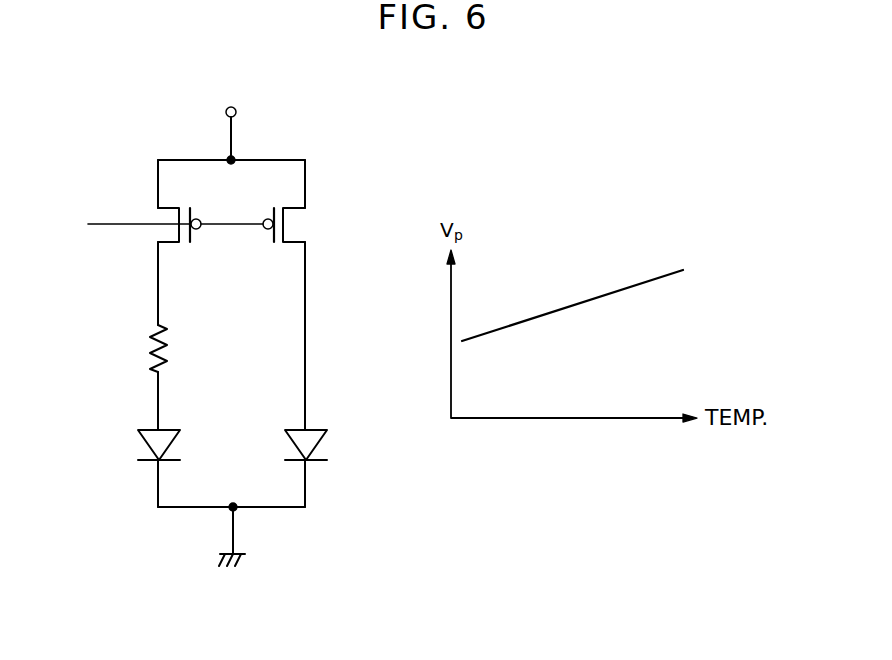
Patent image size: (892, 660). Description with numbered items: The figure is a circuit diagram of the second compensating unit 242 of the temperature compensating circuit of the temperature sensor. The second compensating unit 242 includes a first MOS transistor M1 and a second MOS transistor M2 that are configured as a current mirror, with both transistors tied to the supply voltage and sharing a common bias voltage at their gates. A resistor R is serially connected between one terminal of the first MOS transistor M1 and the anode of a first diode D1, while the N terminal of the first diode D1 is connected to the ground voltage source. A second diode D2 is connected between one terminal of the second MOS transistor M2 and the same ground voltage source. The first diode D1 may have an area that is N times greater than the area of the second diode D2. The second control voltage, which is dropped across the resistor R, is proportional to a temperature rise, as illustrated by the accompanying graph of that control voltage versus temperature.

The second compensating unit 242 is at (372, 217).
The first MOS transistor M1 is at (193, 229).
The second MOS transistor M2 is at (303, 225).
The resistor R is at (170, 348).
The first diode D1 is at (175, 445).
The second diode D2 is at (323, 445).